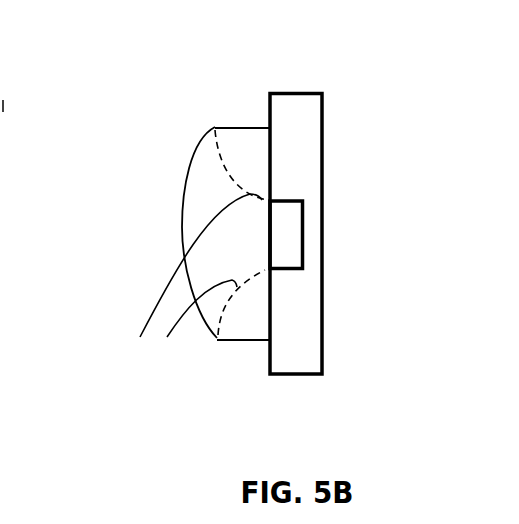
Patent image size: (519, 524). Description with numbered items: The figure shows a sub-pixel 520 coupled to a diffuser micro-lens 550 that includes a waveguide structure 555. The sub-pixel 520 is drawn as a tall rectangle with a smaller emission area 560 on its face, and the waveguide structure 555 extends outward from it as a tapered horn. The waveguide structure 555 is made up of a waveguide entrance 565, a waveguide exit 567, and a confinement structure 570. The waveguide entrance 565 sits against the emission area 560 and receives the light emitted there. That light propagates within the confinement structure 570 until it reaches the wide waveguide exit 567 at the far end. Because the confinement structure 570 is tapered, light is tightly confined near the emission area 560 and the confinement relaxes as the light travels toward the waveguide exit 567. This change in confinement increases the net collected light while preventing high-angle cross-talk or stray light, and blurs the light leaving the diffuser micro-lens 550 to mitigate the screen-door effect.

The sub-pixel 520 is at (293, 93).
The diffuser micro-lens 550 is at (250, 143).
The waveguide structure 555 is at (208, 207).
The emission area 560 is at (297, 232).
The waveguide entrance 565 is at (268, 270).
The waveguide exit 567 is at (183, 234).
The confinement structure 570 is at (156, 304).